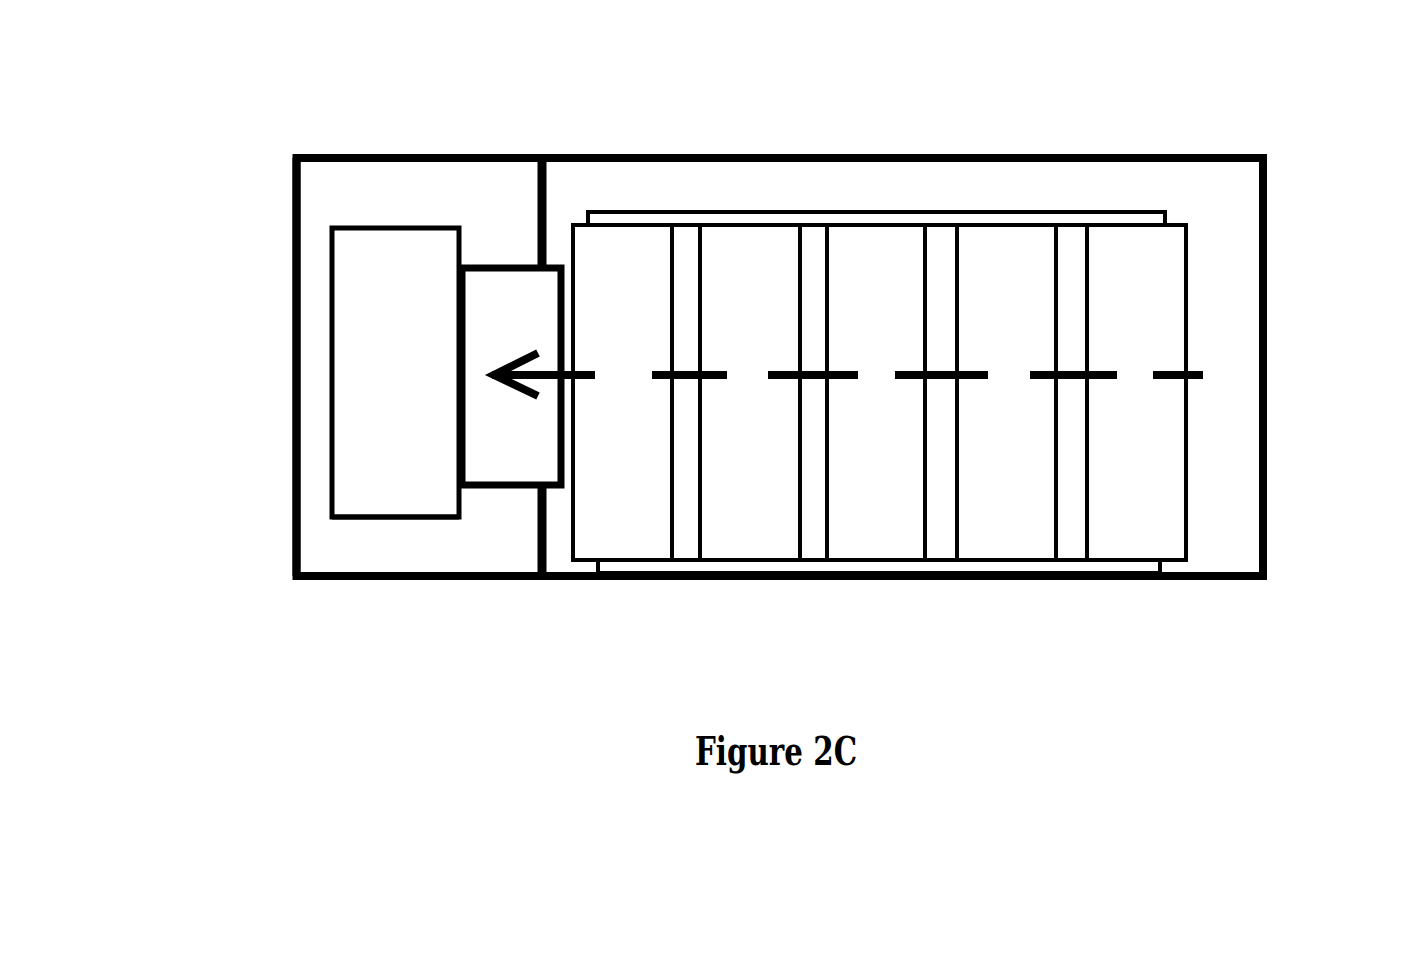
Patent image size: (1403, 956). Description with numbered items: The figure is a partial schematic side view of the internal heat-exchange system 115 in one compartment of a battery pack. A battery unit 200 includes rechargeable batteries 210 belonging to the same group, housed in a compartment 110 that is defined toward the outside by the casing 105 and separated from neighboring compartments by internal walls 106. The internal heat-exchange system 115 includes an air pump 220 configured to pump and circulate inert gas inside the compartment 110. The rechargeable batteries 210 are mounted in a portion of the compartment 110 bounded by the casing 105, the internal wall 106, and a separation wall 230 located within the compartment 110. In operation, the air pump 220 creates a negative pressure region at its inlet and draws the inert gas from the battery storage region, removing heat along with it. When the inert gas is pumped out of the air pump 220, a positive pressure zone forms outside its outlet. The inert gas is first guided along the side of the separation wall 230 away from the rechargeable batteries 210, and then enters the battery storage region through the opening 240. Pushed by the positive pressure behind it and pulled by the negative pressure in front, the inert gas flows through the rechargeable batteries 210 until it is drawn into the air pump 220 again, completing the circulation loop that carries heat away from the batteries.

The battery unit 200 is at (847, 160).
The casing 105 is at (685, 155).
The internal wall 106 is at (294, 258).
The compartment 110 is at (612, 190).
The rechargeable batteries 210 is at (1136, 263).
The air pump 220 is at (378, 262).
The separation wall 230 is at (538, 219).
The opening 240 is at (1224, 371).
The internal heat-exchange system 115 is at (395, 522).